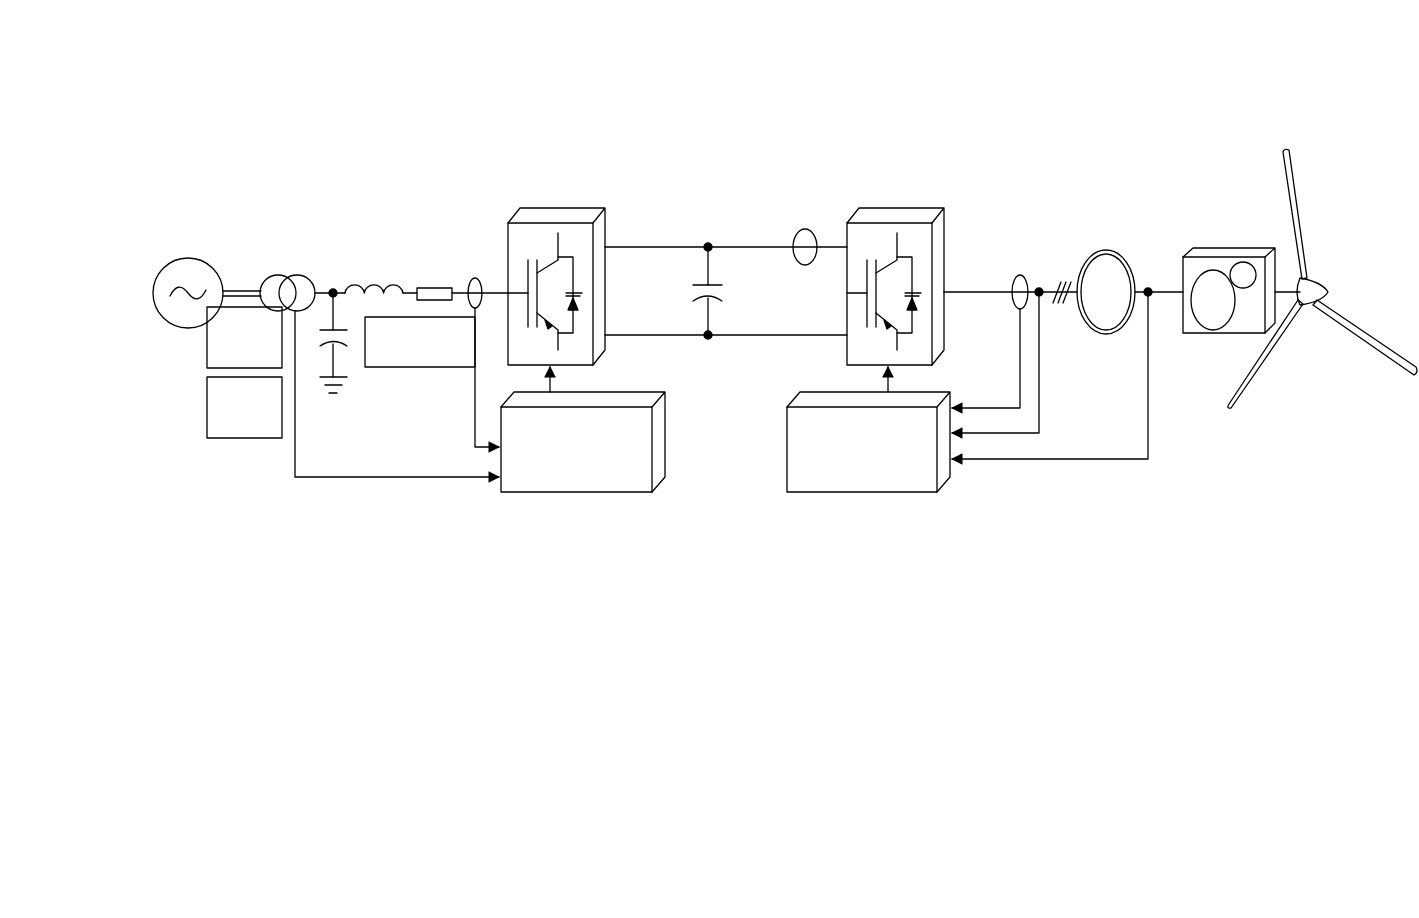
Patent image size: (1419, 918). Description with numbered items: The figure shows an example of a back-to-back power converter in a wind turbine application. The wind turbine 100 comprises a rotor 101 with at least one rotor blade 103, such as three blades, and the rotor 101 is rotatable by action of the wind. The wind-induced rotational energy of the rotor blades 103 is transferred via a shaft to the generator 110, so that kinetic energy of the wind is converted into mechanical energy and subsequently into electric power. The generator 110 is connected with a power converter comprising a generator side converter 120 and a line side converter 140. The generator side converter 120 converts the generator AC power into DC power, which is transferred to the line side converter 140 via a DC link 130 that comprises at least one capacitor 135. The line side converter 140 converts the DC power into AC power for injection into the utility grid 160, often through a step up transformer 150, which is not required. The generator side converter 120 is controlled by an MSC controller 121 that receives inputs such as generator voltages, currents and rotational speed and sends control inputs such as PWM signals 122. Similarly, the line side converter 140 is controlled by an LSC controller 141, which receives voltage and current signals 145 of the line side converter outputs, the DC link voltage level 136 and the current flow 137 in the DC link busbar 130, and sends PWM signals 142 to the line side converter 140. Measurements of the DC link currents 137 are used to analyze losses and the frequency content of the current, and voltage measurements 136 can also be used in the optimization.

The wind turbine 100 is at (1314, 68).
The rotor 101 is at (1327, 277).
The rotor blade 103 is at (1286, 347).
The generator 110 is at (1105, 207).
The generator side converter 120 is at (930, 203).
The MSC controller 121 is at (815, 493).
The PWM signals 122 is at (890, 388).
The DC link 130 is at (708, 193).
The capacitor 135 is at (717, 307).
The DC link voltage level 136 is at (778, 308).
The DC link current 137 is at (803, 199).
The line side converter 140 is at (517, 183).
The LSC controller 141 is at (537, 493).
The PWM signals 142 is at (551, 387).
The voltage and current signals 145 is at (465, 377).
The step up transformer 150 is at (311, 199).
The utility grid 160 is at (181, 259).